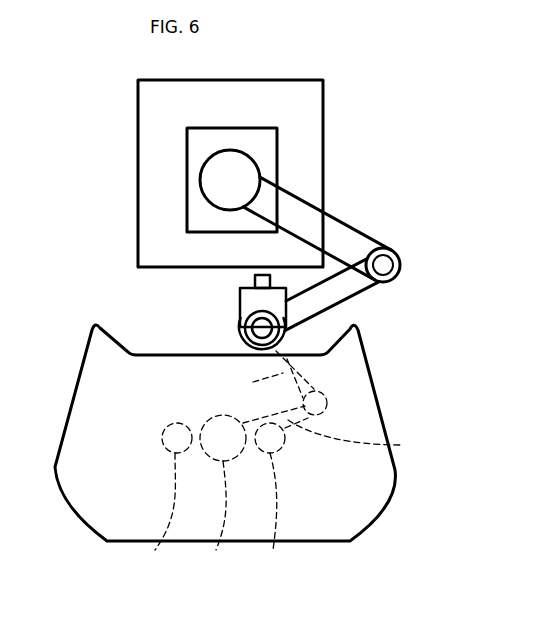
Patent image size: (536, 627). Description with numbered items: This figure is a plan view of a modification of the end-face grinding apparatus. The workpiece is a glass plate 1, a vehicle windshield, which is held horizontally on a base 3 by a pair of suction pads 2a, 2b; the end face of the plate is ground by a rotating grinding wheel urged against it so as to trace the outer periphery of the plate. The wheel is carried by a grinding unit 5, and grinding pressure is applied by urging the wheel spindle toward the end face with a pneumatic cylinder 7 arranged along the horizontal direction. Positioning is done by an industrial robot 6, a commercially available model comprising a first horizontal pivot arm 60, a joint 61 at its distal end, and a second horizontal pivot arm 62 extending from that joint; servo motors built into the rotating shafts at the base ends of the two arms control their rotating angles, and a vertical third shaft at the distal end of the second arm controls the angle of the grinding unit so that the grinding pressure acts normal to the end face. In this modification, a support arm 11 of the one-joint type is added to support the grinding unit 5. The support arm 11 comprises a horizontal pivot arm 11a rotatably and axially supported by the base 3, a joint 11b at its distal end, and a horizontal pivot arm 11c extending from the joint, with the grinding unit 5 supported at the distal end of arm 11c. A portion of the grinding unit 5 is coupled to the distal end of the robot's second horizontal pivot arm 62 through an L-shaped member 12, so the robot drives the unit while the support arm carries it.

The glass plate 1 is at (88, 507).
The suction pad 2a is at (171, 498).
The suction pad 2b is at (271, 498).
The base 3 is at (223, 494).
The grinding unit 5 is at (299, 335).
The industrial robot 6 is at (288, 137).
The pneumatic cylinder 7 is at (258, 281).
The support arm 11 is at (312, 372).
The horizontal pivot arm 11a is at (362, 438).
The joint 11b is at (328, 404).
The horizontal pivot arm 11c is at (248, 378).
The L-shaped member 12 is at (240, 301).
The first horizontal pivot arm 60 is at (330, 228).
The joint 61 is at (383, 262).
The second horizontal pivot arm 62 is at (353, 283).